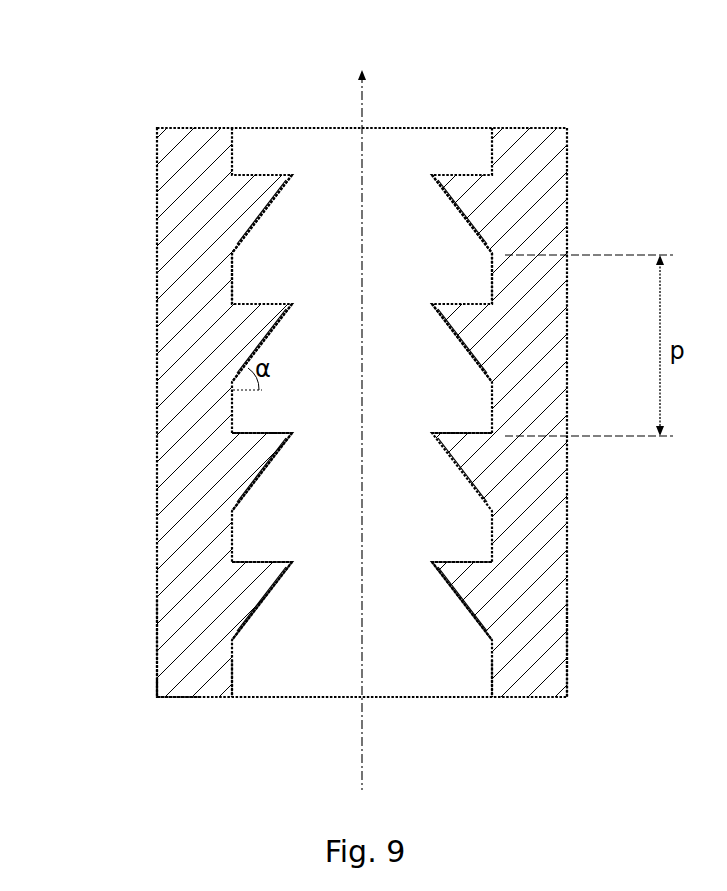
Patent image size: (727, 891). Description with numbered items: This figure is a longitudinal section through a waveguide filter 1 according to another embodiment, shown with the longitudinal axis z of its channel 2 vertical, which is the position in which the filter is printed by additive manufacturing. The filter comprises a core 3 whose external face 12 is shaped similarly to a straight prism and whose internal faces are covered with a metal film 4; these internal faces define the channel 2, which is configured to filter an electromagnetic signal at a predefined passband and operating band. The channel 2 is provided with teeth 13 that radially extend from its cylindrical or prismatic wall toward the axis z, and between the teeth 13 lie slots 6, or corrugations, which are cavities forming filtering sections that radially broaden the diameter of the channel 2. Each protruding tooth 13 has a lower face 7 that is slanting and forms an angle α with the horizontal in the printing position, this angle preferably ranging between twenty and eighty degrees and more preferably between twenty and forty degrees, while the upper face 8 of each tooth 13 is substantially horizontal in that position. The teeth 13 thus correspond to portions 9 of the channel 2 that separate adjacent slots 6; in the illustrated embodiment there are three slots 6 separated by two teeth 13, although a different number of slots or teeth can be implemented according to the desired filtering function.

The waveguide filter 1 is at (108, 718).
The channel 2 is at (408, 147).
The core 3 is at (517, 140).
The metal film 4 is at (231, 697).
The slots 6 is at (435, 238).
The lower face 7 is at (268, 341).
The upper face 8 is at (252, 431).
The portions of the channel 9 is at (234, 284).
The external face 12 is at (158, 637).
The teeth 13 is at (267, 188).